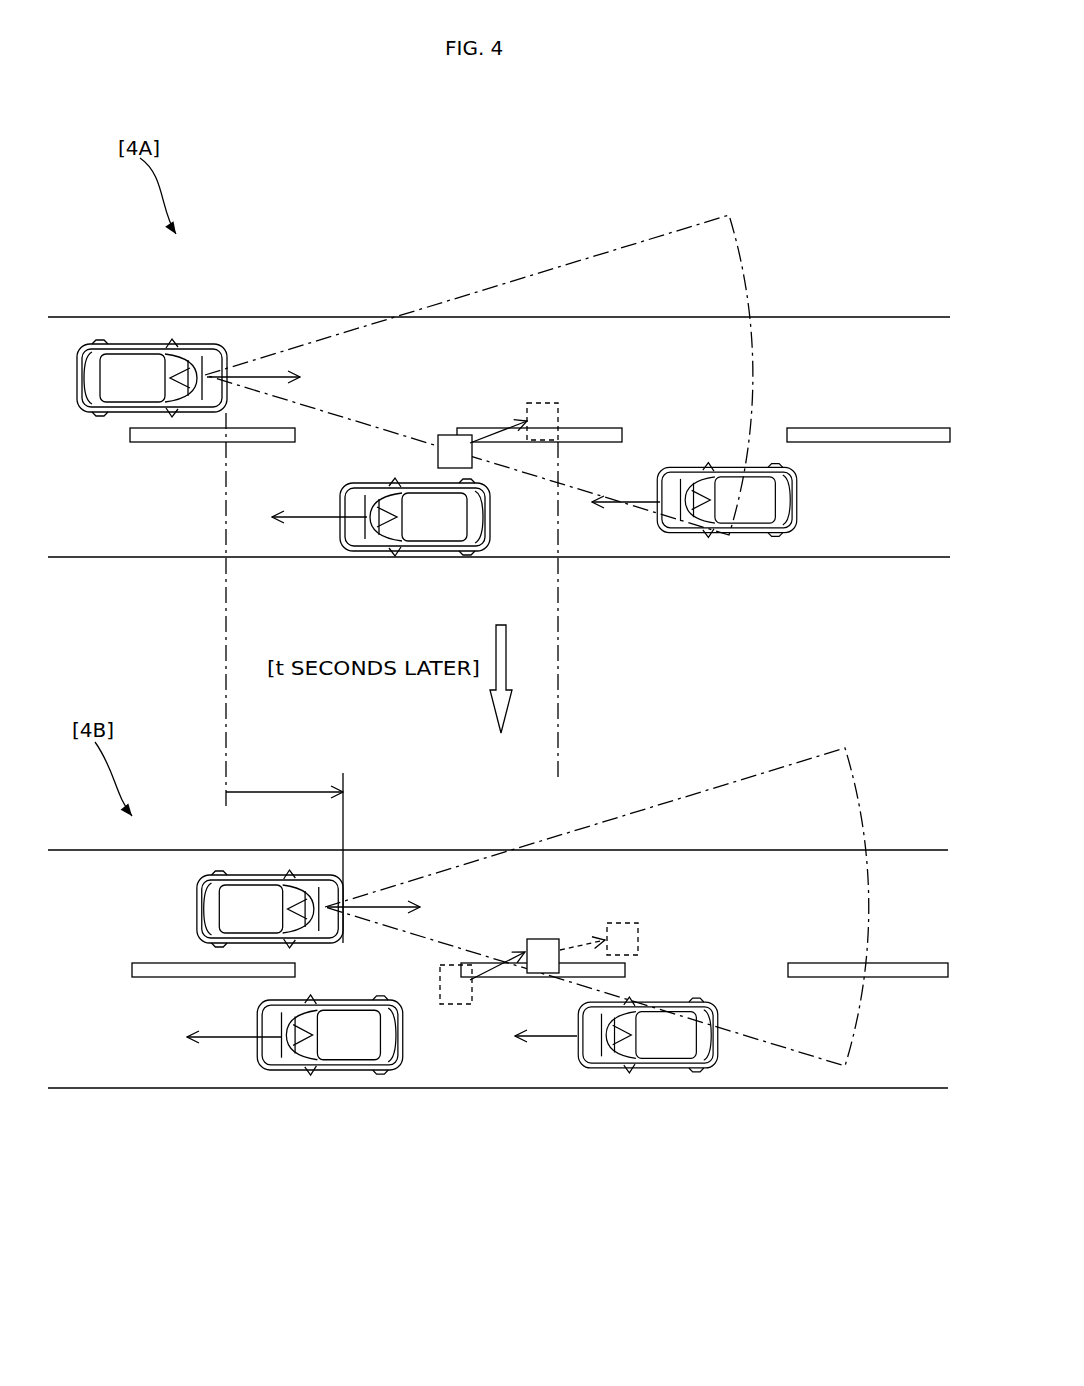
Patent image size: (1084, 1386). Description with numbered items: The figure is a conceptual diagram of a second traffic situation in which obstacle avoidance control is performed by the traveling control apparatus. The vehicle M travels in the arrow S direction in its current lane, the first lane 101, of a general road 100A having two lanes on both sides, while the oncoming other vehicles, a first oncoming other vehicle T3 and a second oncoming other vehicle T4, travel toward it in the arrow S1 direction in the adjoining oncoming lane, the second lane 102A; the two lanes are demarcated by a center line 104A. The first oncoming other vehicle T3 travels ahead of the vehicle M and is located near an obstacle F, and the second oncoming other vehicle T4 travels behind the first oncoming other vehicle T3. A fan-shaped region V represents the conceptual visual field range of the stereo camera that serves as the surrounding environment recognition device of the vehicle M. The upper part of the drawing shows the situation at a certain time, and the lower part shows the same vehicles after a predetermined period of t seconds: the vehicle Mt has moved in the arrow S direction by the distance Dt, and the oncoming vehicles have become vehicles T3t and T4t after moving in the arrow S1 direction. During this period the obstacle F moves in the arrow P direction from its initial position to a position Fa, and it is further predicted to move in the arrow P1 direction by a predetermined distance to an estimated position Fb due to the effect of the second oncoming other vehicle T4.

The road 100A is at (499, 704).
The oncoming lane 102A is at (499, 704).
The current lane 101 is at (913, 337).
The center line 104A is at (810, 433).
The vehicle M is at (137, 368).
The vehicle after elapse of predetermined period Mt is at (248, 897).
The arrow S direction S is at (264, 369).
The arrow S1 direction S1 is at (337, 519).
The first oncoming other vehicle T3 is at (435, 525).
The second oncoming other vehicle T4 is at (757, 508).
The first oncoming other vehicle after elapse of predetermined period T3t is at (350, 1038).
The second oncoming other vehicle after elapse of predetermined period T4t is at (666, 1039).
The visual field range V is at (679, 232).
The obstacle F is at (446, 434).
The position of obstacle after movement Fa is at (545, 402).
The estimated position of obstacle Fb is at (640, 935).
The arrow P direction P is at (488, 433).
The arrow P1 direction P1 is at (575, 945).
The distance moved by vehicle Dt is at (284, 776).